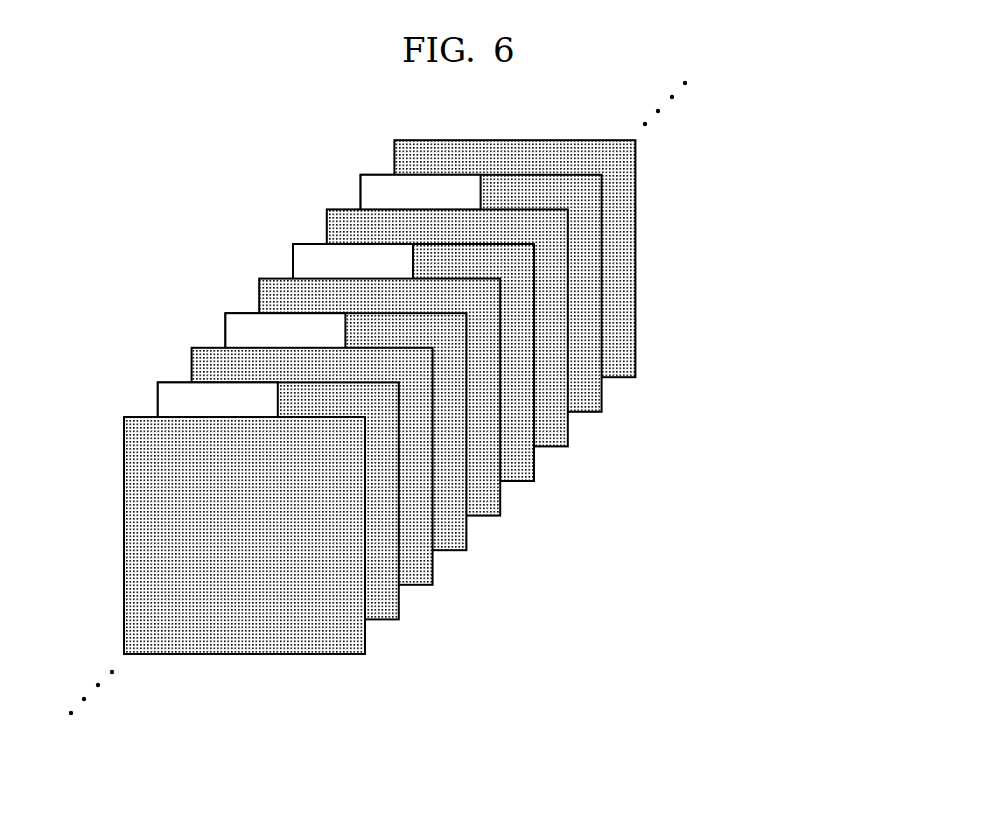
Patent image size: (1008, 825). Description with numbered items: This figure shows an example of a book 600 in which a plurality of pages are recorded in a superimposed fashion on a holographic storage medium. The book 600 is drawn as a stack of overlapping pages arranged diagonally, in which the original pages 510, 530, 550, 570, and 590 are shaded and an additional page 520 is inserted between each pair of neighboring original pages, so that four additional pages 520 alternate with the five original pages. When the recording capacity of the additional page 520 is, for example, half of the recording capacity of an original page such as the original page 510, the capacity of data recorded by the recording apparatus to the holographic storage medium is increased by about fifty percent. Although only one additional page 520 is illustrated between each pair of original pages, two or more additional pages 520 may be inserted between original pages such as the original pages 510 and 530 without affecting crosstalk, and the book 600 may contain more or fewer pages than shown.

The original page 510 is at (148, 417).
The additional page 520 is at (586, 402).
The original page 530 is at (216, 347).
The original page 550 is at (283, 278).
The original page 570 is at (351, 209).
The original page 590 is at (418, 140).
The book 600 is at (680, 188).